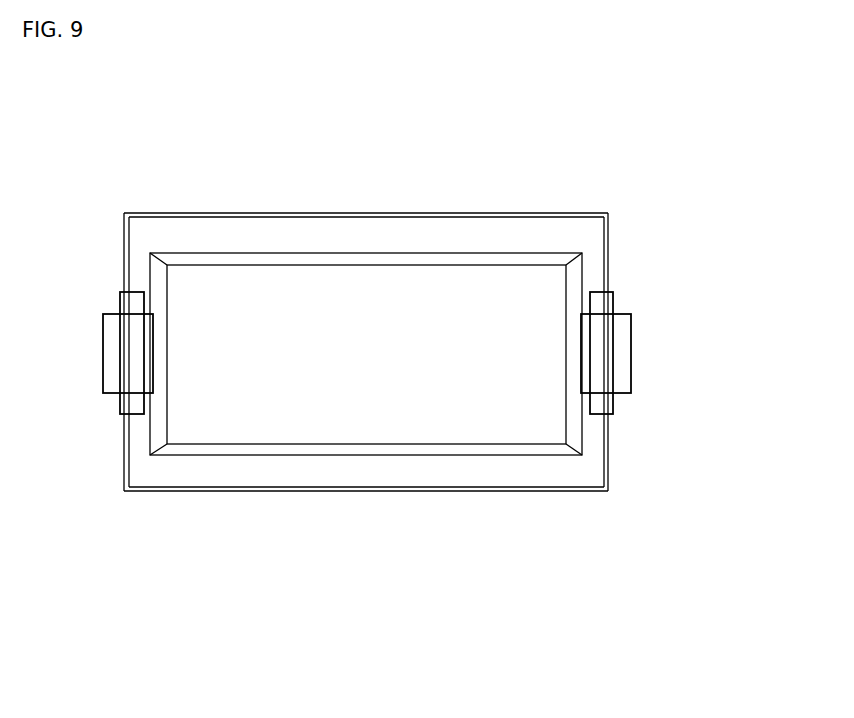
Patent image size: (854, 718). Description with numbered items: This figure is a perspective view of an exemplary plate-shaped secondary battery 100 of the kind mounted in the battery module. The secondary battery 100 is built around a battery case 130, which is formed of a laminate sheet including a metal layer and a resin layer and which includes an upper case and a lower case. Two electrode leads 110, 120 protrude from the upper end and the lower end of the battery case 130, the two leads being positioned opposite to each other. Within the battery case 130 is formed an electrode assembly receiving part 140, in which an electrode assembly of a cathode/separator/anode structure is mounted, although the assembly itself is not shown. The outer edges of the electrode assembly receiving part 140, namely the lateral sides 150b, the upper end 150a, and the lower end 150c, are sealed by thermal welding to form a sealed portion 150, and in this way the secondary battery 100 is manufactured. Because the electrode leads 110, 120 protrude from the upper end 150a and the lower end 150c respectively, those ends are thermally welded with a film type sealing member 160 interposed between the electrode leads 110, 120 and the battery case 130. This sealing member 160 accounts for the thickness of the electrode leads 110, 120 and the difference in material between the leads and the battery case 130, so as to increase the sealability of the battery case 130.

The plate-shaped secondary battery 100 is at (138, 113).
The electrode lead 110 is at (661, 370).
The electrode lead 120 is at (103, 340).
The battery case 130 is at (358, 498).
The electrode assembly receiving part 140 is at (535, 296).
The sealed portion 150 is at (497, 232).
The upper end 150a is at (137, 433).
The lateral side 150b is at (472, 475).
The lower end 150c is at (598, 454).
The film type sealing member 160 is at (593, 403).